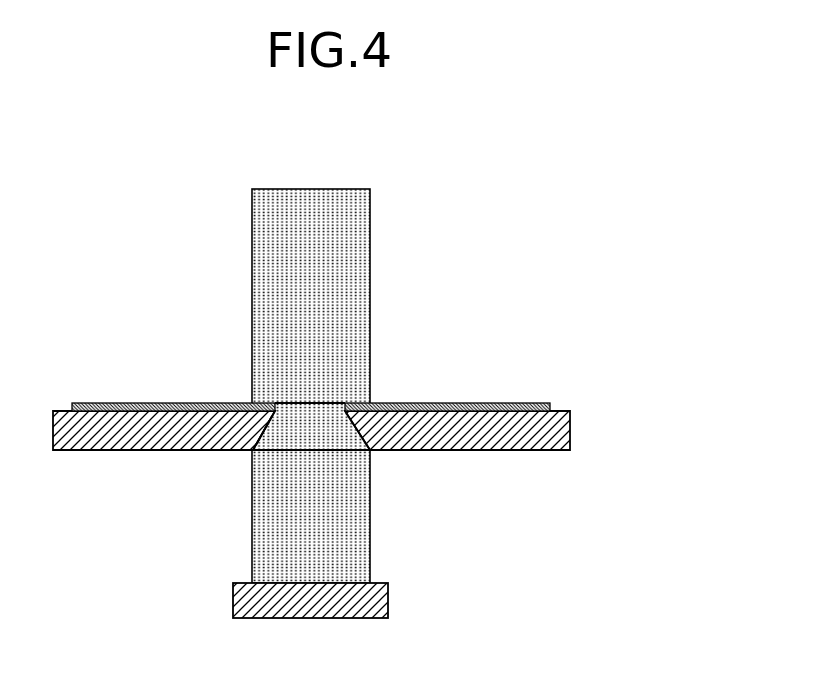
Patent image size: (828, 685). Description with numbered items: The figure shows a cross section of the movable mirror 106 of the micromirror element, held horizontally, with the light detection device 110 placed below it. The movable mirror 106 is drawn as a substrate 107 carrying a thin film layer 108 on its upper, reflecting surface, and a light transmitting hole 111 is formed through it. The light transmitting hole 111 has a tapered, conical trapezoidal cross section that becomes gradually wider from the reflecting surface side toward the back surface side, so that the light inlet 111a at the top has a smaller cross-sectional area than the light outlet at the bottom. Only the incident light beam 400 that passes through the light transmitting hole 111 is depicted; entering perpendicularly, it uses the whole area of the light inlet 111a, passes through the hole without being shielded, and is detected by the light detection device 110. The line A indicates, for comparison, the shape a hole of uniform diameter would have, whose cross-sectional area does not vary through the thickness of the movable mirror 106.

The incident light beam 400 is at (331, 190).
The movable mirror 106 is at (387, 415).
The substrate 107 is at (556, 430).
The light-shielding film 108 is at (551, 403).
The light transmitting hole 111 is at (320, 442).
The light inlet 111a is at (323, 395).
The light detection device 110 is at (390, 600).
The broken line A is at (238, 430).